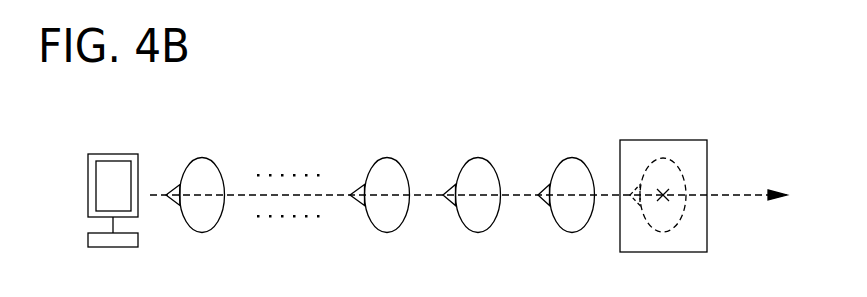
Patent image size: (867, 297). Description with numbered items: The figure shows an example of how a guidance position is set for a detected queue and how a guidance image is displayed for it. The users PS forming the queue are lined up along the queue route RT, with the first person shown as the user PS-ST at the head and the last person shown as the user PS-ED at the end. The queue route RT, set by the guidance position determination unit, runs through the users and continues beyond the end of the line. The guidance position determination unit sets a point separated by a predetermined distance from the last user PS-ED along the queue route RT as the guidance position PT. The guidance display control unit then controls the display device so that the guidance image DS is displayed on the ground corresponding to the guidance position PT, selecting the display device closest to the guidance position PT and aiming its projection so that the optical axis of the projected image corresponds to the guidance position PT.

The user at the head of the queue PS-ST is at (202, 233).
The user PS is at (388, 158).
The user at the end of the queue PS-ED is at (572, 233).
The guidance image DS is at (695, 140).
The guidance position PT is at (661, 191).
The queue route RT is at (750, 193).